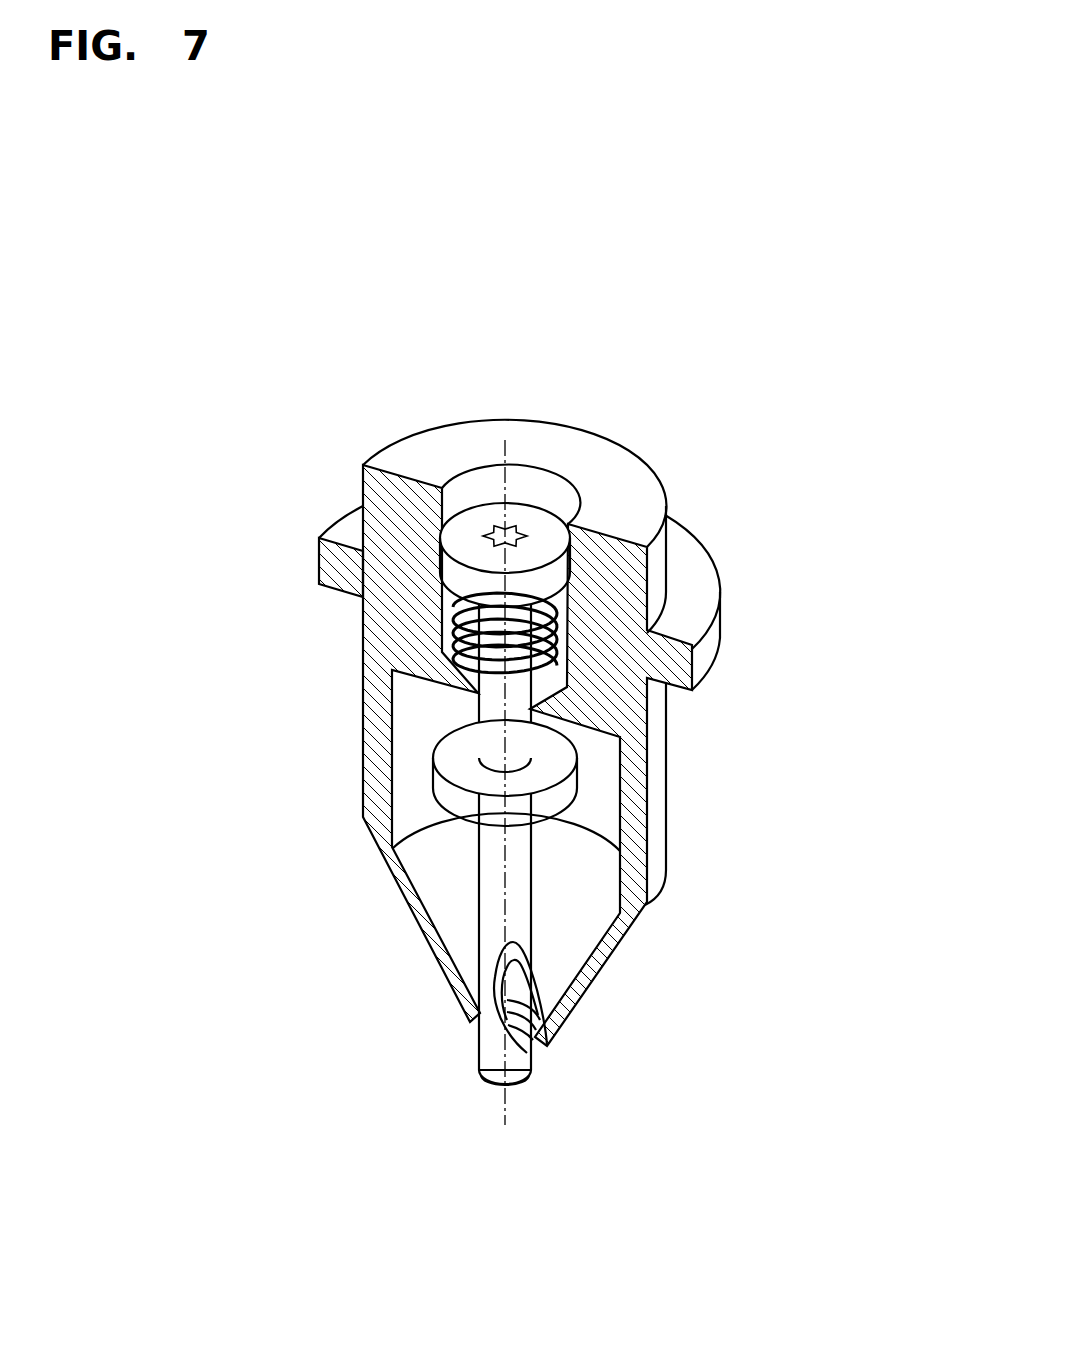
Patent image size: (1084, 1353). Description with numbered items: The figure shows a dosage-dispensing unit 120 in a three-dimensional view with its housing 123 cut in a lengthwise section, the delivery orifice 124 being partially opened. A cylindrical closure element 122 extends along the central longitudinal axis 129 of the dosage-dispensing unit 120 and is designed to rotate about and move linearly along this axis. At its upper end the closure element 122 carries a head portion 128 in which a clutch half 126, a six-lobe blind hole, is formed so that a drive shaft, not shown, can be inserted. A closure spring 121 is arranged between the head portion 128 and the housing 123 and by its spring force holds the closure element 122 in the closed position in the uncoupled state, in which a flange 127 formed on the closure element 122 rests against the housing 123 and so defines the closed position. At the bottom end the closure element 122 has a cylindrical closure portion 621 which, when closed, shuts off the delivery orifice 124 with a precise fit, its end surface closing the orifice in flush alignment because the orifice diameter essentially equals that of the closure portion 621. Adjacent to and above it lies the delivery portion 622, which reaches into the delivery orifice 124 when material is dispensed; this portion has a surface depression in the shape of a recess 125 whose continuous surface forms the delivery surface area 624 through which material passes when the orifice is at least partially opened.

The dosage-dispensing unit 120 is at (322, 437).
The closure spring 121 is at (617, 690).
The closure element 122 is at (507, 888).
The housing 123 is at (615, 497).
The delivery orifice 124 is at (547, 1055).
The recess 125 is at (512, 963).
The clutch half 126 is at (493, 533).
The flange 127 is at (468, 762).
The head portion 128 is at (537, 527).
The central longitudinal axis 129 is at (507, 1122).
The closure portion 621 is at (493, 1077).
The delivery portion 622 is at (490, 1037).
The delivery surface area 624 is at (525, 985).